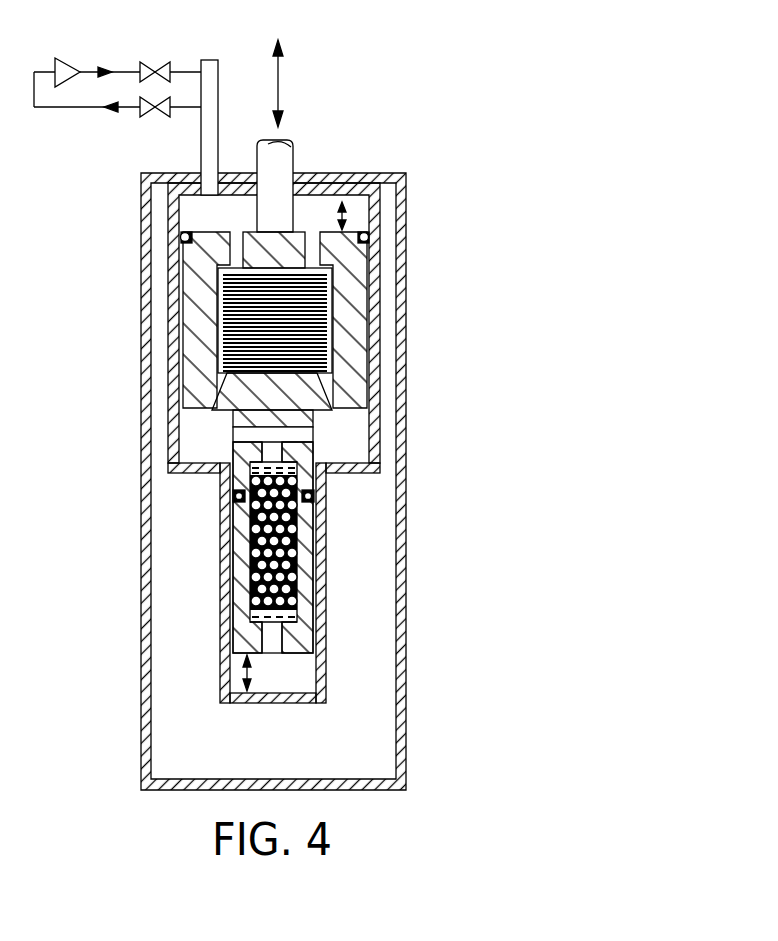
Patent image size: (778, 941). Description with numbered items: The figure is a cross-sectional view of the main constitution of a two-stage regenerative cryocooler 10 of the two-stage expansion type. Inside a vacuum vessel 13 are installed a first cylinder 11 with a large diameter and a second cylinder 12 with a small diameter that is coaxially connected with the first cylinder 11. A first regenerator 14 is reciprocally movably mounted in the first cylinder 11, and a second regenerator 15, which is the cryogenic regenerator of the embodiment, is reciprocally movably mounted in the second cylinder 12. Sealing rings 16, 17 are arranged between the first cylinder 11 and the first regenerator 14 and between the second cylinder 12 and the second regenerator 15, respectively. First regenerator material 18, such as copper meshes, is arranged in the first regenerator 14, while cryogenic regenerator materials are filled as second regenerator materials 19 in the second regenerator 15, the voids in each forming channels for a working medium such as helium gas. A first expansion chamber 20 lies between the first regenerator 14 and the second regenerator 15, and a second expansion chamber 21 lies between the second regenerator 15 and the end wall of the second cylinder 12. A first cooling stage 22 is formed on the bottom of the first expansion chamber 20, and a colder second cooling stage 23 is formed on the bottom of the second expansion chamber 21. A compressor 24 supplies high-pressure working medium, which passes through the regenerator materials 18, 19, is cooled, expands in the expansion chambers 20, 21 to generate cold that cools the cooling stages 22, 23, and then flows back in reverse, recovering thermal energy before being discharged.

The two-stage regenerative cryocooler 10 is at (430, 140).
The first cylinder 11 is at (173, 318).
The second cylinder 12 is at (222, 568).
The vacuum vessel 13 is at (140, 652).
The first regenerator 14 is at (355, 352).
The second regenerator 15 is at (300, 637).
The sealing ring 16 is at (368, 237).
The sealing ring 17 is at (315, 497).
The first regenerator material 18 is at (328, 300).
The second regenerator materials 19 is at (297, 565).
The first expansion chamber 20 is at (352, 442).
The second expansion chamber 21 is at (297, 677).
The first cooling stage 22 is at (353, 490).
The second cooling stage 23 is at (310, 704).
The compressor 24 is at (70, 60).